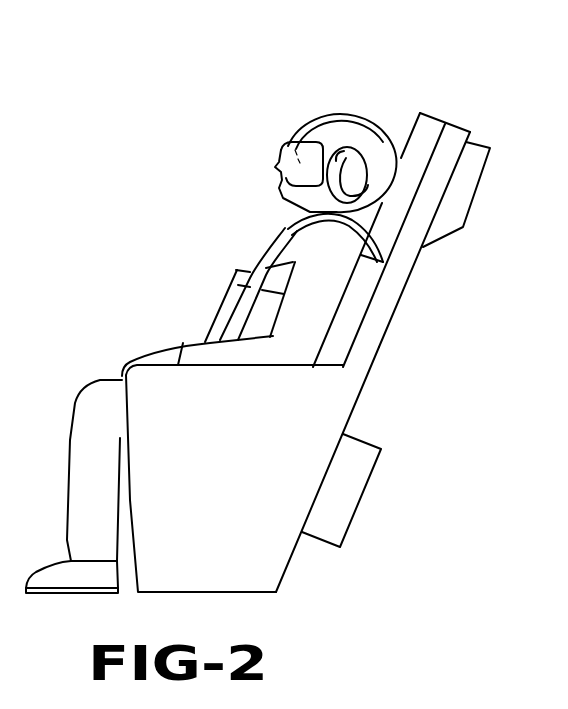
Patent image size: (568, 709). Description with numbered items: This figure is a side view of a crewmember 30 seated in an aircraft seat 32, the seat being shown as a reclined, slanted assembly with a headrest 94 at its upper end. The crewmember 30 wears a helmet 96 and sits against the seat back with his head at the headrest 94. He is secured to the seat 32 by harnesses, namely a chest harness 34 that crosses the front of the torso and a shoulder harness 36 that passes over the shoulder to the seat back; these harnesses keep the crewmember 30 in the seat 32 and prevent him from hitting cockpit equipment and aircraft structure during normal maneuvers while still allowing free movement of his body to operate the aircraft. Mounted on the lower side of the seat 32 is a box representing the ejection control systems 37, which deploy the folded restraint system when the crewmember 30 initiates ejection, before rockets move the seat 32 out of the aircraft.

The crewmember 30 is at (320, 297).
The aircraft seat 32 is at (333, 402).
The chest harness 34 is at (238, 272).
The shoulder harness 36 is at (290, 228).
The ejection control systems 37 is at (357, 508).
The headrest 94 is at (432, 116).
The helmet 96 is at (317, 116).